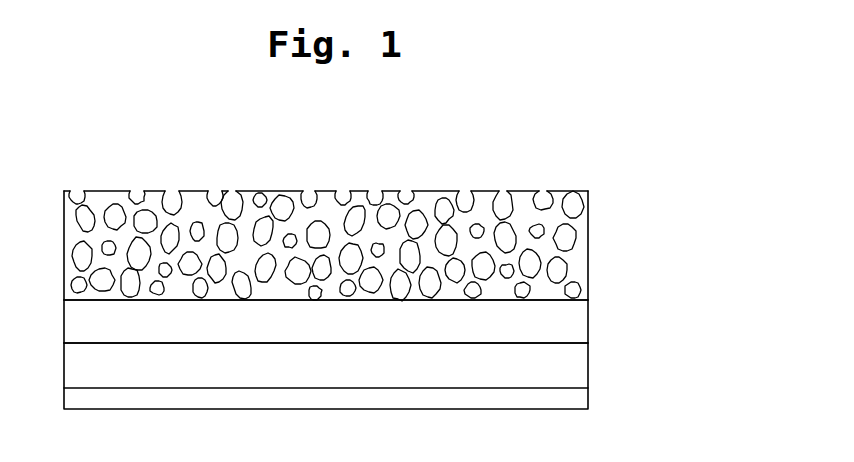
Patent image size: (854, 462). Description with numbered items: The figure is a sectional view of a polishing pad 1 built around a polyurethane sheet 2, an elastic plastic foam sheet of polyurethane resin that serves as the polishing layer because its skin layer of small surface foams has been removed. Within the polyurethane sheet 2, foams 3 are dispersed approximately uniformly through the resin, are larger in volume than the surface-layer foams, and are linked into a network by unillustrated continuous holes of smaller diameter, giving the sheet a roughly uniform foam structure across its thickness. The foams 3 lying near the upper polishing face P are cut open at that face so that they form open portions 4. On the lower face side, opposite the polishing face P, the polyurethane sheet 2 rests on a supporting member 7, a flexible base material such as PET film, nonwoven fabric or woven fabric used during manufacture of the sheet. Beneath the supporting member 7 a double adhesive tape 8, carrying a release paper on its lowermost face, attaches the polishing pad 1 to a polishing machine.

The polishing pad 1 is at (173, 158).
The polyurethane sheet 2 is at (582, 267).
The foams 3 is at (226, 197).
The polishing face P is at (415, 192).
The open portions 4 is at (539, 203).
The supporting member 7 is at (582, 330).
The double adhesive tape 8 is at (578, 375).